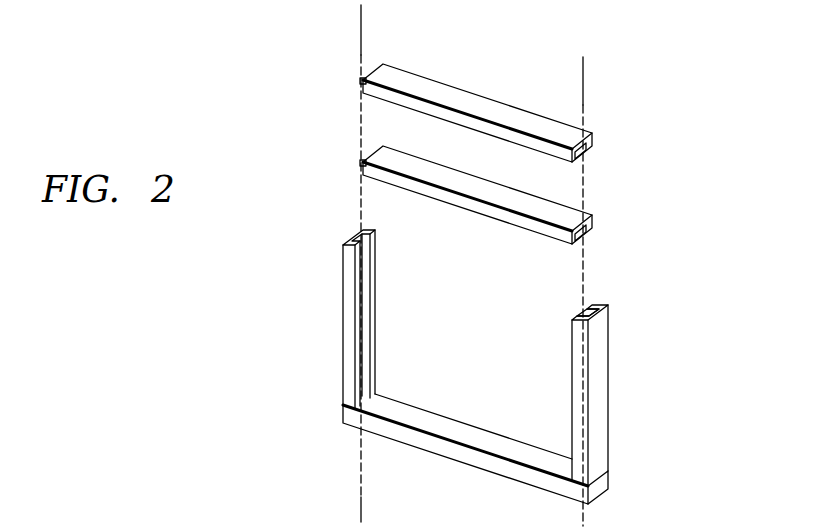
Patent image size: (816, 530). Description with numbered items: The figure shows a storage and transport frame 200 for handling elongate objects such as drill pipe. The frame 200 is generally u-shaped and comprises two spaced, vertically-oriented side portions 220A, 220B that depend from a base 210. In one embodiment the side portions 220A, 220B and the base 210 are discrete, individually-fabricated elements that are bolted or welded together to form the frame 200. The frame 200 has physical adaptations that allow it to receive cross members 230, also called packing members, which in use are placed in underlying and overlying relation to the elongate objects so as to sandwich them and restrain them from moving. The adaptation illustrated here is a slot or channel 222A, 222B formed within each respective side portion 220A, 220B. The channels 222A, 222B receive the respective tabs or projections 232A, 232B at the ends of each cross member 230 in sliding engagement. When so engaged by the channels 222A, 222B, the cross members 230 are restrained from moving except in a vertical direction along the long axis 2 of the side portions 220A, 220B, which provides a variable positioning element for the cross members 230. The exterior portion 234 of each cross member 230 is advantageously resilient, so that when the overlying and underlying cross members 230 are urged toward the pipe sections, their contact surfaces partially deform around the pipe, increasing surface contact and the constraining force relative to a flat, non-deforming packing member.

The long axis 2 is at (360, 25).
The storage and transport frame 200 is at (460, 369).
The base 210 is at (455, 455).
The side portion 220A is at (354, 319).
The side portion 220B is at (595, 382).
The channel 222A is at (369, 273).
The channel 222B is at (584, 313).
The cross member 230 is at (489, 143).
The tab 232A is at (363, 162).
The tab 232B is at (590, 150).
The exterior portion 234 is at (458, 102).